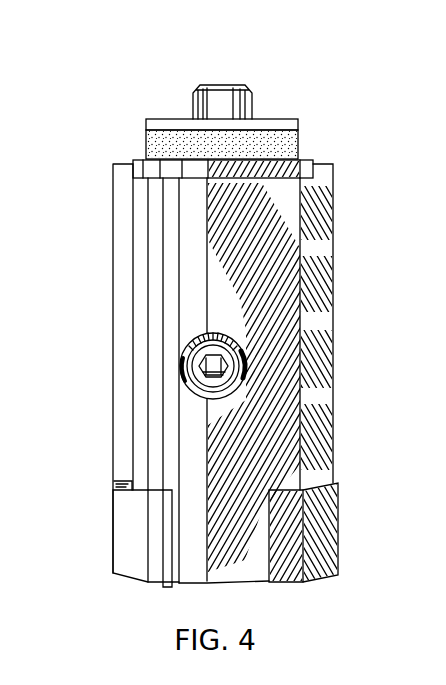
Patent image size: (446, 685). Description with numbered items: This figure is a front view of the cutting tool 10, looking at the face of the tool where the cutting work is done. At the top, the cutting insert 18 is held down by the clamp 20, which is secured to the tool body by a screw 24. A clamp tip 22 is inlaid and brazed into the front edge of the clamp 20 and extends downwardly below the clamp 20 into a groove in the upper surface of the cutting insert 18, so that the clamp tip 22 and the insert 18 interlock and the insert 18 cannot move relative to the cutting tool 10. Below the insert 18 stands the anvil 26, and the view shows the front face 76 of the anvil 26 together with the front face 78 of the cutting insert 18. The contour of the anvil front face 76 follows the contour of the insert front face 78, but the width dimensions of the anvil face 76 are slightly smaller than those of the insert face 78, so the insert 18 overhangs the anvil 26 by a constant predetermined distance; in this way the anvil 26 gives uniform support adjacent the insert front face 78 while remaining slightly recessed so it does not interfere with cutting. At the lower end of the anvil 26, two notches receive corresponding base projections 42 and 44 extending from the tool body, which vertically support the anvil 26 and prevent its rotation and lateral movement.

The cutting tool 10 is at (183, 97).
The cutting insert 18 is at (136, 157).
The clamp 20 is at (276, 124).
The clamp tip 22 is at (286, 146).
The screw 24 is at (254, 100).
The anvil 26 is at (104, 319).
The base projection 42 is at (320, 519).
The base projection 44 is at (137, 525).
The anvil front face 76 is at (156, 240).
The insert front face 78 is at (157, 175).